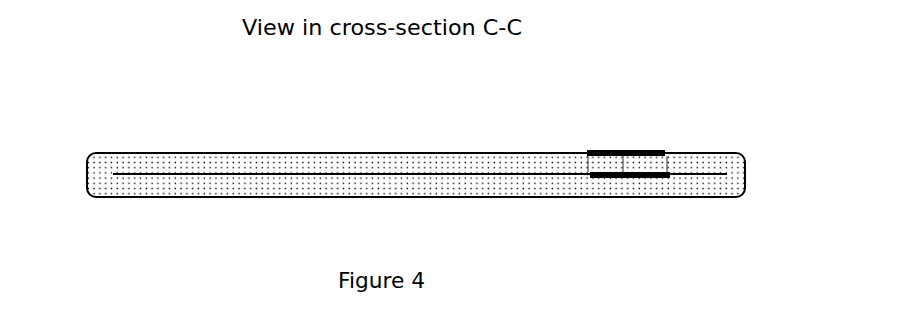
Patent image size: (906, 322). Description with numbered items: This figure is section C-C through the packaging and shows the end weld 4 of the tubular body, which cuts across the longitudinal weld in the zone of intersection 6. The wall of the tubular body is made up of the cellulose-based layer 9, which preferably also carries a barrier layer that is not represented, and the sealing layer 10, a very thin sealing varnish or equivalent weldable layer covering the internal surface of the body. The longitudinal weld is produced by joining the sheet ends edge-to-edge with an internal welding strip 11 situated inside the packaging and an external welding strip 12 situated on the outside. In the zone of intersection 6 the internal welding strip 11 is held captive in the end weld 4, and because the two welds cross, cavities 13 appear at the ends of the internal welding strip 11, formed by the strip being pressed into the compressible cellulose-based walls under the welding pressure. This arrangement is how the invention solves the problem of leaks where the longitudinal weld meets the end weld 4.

The end weld 4 is at (199, 124).
The zone of intersection of the longitudinal weld and of the end weld 6 is at (619, 159).
The cellulose-based layer of the tubular body 9 is at (548, 190).
The sealing layer of the tubular body 10 is at (403, 174).
The internal welding strip 11 is at (637, 178).
The external welding strip 12 is at (608, 150).
The cavities 13 is at (586, 172).